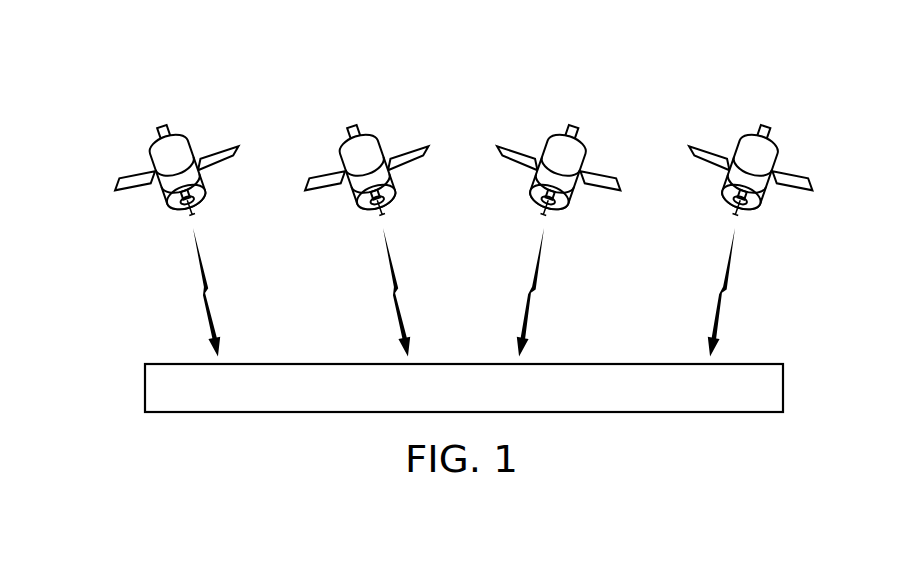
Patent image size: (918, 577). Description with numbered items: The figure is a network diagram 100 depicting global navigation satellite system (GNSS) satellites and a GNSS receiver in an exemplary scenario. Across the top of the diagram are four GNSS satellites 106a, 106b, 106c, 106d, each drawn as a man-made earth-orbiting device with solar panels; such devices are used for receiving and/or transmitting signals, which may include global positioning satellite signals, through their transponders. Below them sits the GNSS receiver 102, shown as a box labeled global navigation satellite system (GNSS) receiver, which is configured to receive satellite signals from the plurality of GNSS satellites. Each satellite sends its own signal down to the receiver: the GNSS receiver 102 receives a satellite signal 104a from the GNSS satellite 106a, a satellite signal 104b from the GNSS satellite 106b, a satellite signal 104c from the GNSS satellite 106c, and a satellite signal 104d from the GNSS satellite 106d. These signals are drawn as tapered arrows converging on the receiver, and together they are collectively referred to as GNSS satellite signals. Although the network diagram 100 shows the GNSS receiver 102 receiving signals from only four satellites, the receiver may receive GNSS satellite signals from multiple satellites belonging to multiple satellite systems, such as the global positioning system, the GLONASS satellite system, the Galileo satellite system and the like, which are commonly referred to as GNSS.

The network diagram 100 is at (372, 74).
The GNSS receiver 102 is at (145, 386).
The satellite signal 104a is at (200, 272).
The satellite signal 104b is at (390, 272).
The satellite signal 104c is at (538, 272).
The satellite signal 104d is at (728, 272).
The GNSS satellite 106a is at (142, 147).
The GNSS satellite 106b is at (332, 147).
The GNSS satellite 106c is at (595, 147).
The GNSS satellite 106d is at (787, 147).